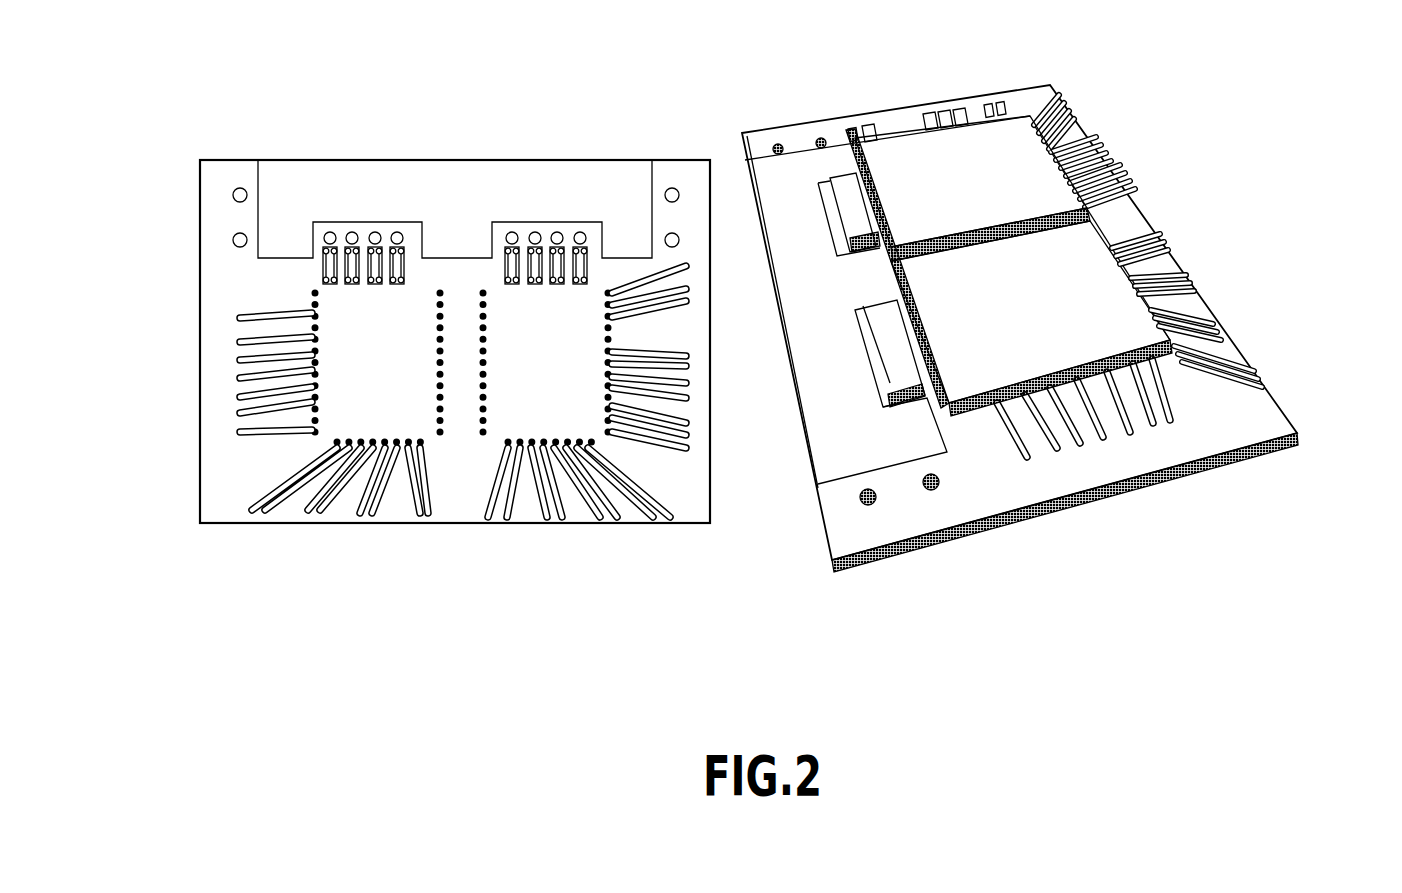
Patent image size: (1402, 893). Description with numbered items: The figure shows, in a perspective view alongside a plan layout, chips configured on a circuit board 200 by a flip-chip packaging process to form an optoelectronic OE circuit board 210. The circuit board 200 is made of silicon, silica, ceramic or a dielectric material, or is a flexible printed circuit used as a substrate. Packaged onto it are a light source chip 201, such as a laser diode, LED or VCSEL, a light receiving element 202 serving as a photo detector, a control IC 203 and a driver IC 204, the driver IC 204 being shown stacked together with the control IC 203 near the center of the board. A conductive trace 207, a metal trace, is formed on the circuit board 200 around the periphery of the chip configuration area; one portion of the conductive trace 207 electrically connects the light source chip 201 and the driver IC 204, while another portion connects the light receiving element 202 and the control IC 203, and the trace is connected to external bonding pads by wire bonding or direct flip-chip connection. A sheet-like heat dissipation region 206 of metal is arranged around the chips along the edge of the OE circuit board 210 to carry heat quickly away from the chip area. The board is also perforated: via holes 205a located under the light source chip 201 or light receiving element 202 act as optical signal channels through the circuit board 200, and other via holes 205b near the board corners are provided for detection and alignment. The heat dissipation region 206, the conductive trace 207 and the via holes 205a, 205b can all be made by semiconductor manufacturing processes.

The circuit board 200 is at (630, 524).
The light source chip 201 is at (887, 325).
The light receiving element 202 is at (848, 193).
The control IC 203 is at (1006, 148).
The driver IC 204 is at (1072, 235).
The via holes 205a is at (333, 233).
The via holes 205b is at (242, 186).
The heat dissipation region 206 is at (458, 197).
The conductive trace 207 is at (323, 498).
The OE circuit board 210 is at (1150, 500).